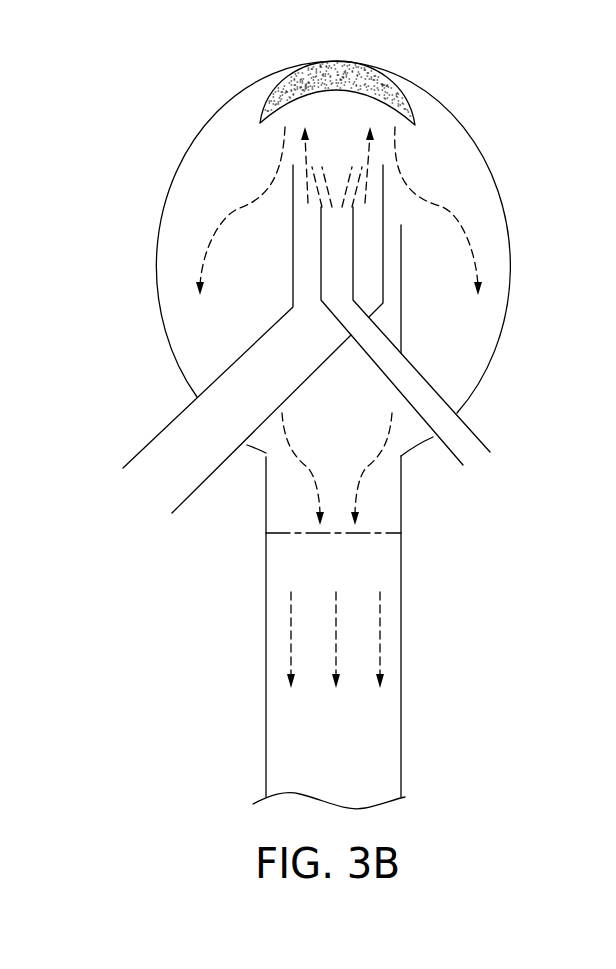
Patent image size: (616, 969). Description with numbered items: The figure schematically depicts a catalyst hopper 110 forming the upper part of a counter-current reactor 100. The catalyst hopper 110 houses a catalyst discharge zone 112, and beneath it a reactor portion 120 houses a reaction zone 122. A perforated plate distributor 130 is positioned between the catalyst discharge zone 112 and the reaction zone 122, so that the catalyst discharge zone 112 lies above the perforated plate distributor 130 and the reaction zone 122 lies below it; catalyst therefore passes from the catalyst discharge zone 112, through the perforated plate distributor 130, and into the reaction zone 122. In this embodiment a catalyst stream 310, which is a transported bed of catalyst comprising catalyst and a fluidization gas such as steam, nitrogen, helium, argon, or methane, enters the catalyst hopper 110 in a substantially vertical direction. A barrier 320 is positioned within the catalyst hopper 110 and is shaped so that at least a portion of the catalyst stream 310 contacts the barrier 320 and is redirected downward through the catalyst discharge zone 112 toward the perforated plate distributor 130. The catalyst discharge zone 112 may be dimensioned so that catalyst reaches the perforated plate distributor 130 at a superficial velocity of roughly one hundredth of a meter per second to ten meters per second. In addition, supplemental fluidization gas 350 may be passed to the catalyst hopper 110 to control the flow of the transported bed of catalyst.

The counter-current reactor 100 is at (537, 168).
The catalyst hopper 110 is at (513, 262).
The catalyst discharge zone 112 is at (356, 441).
The reactor portion 120 is at (401, 690).
The reaction zone 122 is at (357, 739).
The perforated plate distributor 130 is at (401, 533).
The catalyst stream 310 is at (139, 480).
The barrier 320 is at (401, 75).
The supplemental fluidization gas 350 is at (468, 448).